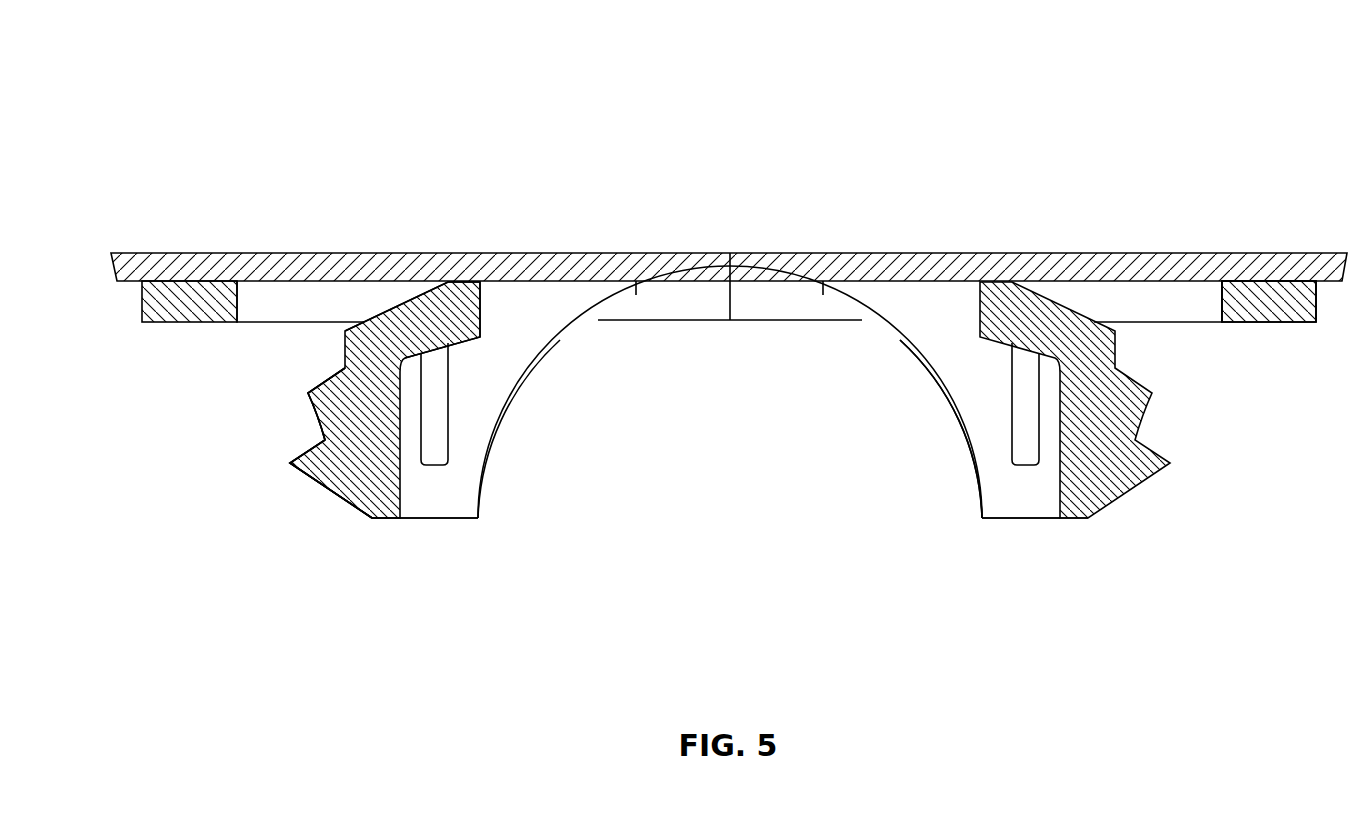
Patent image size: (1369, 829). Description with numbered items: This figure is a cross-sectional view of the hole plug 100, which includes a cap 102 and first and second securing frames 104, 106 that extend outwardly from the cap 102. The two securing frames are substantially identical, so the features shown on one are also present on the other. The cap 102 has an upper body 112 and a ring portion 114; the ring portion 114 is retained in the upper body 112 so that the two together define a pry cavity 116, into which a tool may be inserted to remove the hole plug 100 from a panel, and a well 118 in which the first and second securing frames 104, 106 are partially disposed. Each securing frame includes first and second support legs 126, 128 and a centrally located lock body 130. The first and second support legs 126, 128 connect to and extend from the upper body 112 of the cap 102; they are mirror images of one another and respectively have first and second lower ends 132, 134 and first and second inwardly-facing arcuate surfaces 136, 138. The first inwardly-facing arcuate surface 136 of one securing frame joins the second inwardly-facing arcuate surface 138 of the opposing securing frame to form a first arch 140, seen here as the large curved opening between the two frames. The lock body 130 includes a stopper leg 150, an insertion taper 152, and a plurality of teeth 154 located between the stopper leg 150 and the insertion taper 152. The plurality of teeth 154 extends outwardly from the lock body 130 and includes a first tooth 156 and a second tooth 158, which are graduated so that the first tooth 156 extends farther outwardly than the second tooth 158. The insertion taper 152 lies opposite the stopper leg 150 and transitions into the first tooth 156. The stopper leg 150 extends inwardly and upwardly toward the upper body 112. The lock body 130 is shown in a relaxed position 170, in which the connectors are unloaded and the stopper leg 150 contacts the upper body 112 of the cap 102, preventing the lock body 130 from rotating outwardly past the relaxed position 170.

The hole plug 100 is at (201, 104).
The cap 102 is at (280, 253).
The first securing frame 104 is at (442, 503).
The second securing frame 106 is at (1020, 492).
The upper body 112 is at (1265, 265).
The ring portion 114 is at (1288, 310).
The pry cavity 116 is at (1327, 290).
The well 118 is at (1165, 301).
The first support leg 126 is at (545, 318).
The second support leg 128 is at (922, 315).
The lock body 130 is at (375, 373).
The first lower end 132 is at (455, 520).
The second lower end 134 is at (1003, 520).
The first inwardly-facing arcuate surface 136 is at (510, 440).
The second inwardly-facing arcuate surface 138 is at (968, 460).
The first arch 140 is at (575, 335).
The stopper leg 150 is at (432, 312).
The insertion taper 152 is at (352, 485).
The plurality of teeth 154 is at (203, 446).
The first tooth 156 is at (310, 468).
The second tooth 158 is at (323, 408).
The relaxed position 170 is at (950, 346).